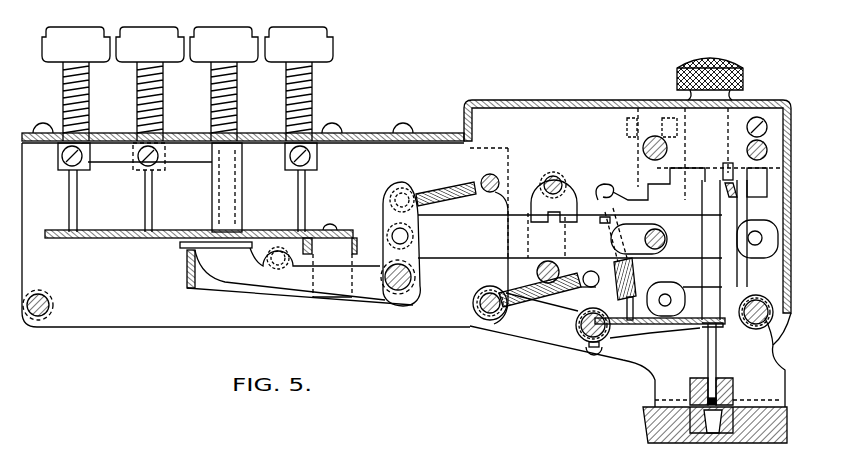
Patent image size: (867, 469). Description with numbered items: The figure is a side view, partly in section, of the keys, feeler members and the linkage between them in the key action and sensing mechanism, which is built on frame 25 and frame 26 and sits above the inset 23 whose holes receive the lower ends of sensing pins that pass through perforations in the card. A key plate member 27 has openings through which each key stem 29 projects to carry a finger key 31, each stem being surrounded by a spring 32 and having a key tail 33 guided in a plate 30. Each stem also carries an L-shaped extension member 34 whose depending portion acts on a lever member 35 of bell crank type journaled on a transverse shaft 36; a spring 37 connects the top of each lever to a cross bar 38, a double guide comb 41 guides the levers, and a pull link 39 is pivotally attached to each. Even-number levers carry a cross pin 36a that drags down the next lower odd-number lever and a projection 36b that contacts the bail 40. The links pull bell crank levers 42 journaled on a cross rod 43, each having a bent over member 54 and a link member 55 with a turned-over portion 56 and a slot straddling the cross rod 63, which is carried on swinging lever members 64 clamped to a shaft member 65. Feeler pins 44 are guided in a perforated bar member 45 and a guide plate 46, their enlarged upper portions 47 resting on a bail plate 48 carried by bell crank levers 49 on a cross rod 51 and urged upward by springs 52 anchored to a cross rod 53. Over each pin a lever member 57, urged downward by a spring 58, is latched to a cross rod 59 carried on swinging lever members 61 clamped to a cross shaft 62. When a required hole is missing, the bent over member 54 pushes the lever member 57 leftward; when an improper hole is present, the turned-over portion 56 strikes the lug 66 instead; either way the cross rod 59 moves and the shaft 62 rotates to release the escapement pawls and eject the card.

The inset 23 is at (737, 430).
The frame 25 is at (120, 327).
The frame 26 is at (582, 338).
The key plate member 27 is at (116, 133).
The key stem 29 is at (137, 90).
The plate 30 is at (110, 240).
The finger key 31 is at (126, 30).
The spring 32 is at (311, 103).
The key tail 33 is at (143, 208).
The extension member 34 is at (183, 163).
The lever member 35 is at (328, 285).
The transverse shaft 36 is at (397, 292).
The cross pin 36a is at (270, 270).
The projection 36b is at (185, 246).
The spring 37 is at (420, 190).
The cross bar 38 is at (480, 178).
The pull link 39 is at (467, 252).
The bail 40 is at (187, 272).
The double guide comb 41 is at (357, 252).
The bell crank lever 42 is at (778, 325).
The cross rod 43 is at (748, 328).
The feeler pin 44 is at (708, 367).
The perforated bar member 45 is at (719, 397).
The guide plate 46 is at (732, 198).
The enlarged upper portion 47 is at (706, 327).
The bail plate 48 is at (700, 323).
The bell crank lever 49 is at (623, 338).
The cross rod 51 is at (560, 346).
The spring 52 is at (546, 302).
The cross rod 53 is at (473, 305).
The bent over member 54 is at (773, 100).
The link member 55 is at (597, 277).
The turned-over portion 56 is at (670, 197).
The lever member 57 is at (580, 173).
The spring 58 is at (612, 262).
The cross rod 59 is at (551, 175).
The swinging lever member 61 is at (535, 226).
The cross shaft 62 is at (548, 261).
The cross rod 63 is at (660, 248).
The swinging lever member 64 is at (630, 128).
The shaft member 65 is at (655, 136).
The lug 66 is at (650, 187).